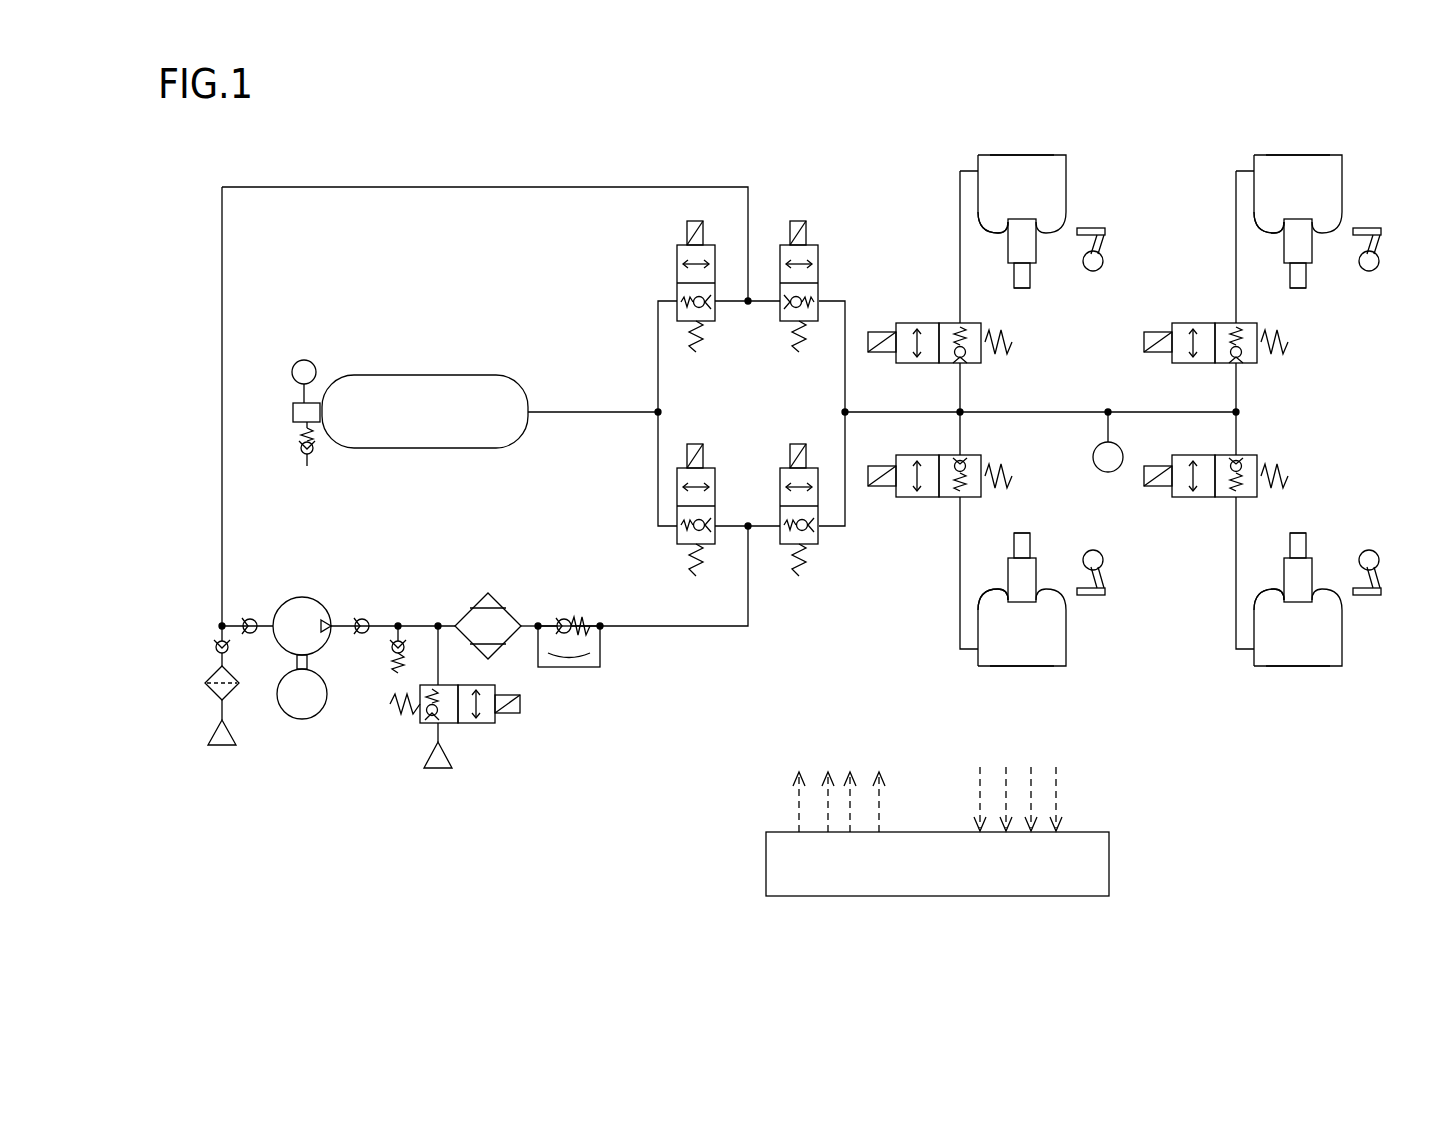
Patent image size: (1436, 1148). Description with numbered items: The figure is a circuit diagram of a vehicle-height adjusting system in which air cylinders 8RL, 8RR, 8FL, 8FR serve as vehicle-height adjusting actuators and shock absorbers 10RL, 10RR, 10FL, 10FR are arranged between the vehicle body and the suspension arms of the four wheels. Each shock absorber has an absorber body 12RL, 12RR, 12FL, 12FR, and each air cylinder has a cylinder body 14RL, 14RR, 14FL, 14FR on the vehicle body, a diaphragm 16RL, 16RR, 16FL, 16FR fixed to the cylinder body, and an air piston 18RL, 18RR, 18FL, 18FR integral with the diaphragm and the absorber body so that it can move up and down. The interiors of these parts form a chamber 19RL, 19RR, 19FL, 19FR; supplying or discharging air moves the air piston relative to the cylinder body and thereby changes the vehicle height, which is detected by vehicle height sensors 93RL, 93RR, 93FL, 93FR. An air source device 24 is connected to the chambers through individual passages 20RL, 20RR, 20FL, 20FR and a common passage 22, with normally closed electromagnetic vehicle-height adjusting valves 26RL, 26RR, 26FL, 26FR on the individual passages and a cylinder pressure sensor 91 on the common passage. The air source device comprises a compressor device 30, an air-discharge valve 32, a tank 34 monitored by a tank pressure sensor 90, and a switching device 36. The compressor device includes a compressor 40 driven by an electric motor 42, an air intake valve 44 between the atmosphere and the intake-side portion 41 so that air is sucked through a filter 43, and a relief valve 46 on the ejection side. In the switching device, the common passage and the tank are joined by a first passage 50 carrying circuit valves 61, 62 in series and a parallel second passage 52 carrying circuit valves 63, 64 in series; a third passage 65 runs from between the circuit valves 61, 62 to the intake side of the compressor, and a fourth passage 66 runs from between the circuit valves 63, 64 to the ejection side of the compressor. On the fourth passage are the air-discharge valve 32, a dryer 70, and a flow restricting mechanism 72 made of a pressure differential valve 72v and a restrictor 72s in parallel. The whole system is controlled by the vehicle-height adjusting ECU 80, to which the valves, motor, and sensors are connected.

The air cylinder 8RL is at (1070, 151).
The air cylinder 8RR is at (1070, 670).
The air cylinder 8FL is at (1346, 151).
The air cylinder 8FR is at (1346, 670).
The shock absorber 10RL is at (1034, 298).
The shock absorber 10RR is at (1042, 525).
The shock absorber 10FL is at (1310, 298).
The shock absorber 10FR is at (1318, 525).
The absorber body 12RL is at (1030, 280).
The absorber body 12RR is at (1022, 545).
The absorber body 12FL is at (1306, 280).
The absorber body 12FR is at (1298, 545).
The cylinder body 14RL is at (1000, 153).
The cylinder body 14RR is at (1000, 668).
The cylinder body 14FL is at (1276, 153).
The cylinder body 14FR is at (1276, 668).
The diaphragm 16RL is at (978, 231).
The diaphragm 16RR is at (978, 592).
The diaphragm 16FL is at (1254, 231).
The diaphragm 16FR is at (1254, 592).
The air piston 18RL is at (1012, 252).
The air piston 18RR is at (1012, 570).
The air piston 18FL is at (1288, 252).
The air piston 18FR is at (1288, 570).
The chamber 19RL is at (1024, 163).
The chamber 19RR is at (1032, 662).
The chamber 19FL is at (1300, 163).
The chamber 19FR is at (1308, 662).
The individual passage 20RL is at (960, 293).
The individual passage 20RR is at (960, 528).
The individual passage 20FL is at (1236, 293).
The individual passage 20FR is at (1236, 528).
The common passage 22 is at (872, 410).
The air source device 24 is at (509, 145).
The vehicle-height adjusting valve 26RL is at (975, 361).
The vehicle-height adjusting valve 26RR is at (965, 458).
The vehicle-height adjusting valve 26FL is at (1251, 361).
The vehicle-height adjusting valve 26FR is at (1241, 458).
The compressor device 30 is at (300, 578).
The air-discharge valve 32 is at (490, 719).
The tank 34 is at (480, 385).
The switching device 36 is at (768, 195).
The compressor 40 is at (292, 608).
The intake-side portion 41 is at (216, 622).
The electric motor 42 is at (290, 706).
The filter 43 is at (215, 672).
The air intake valve 44 is at (211, 643).
The relief valve 46 is at (393, 652).
The first passage 50 is at (658, 336).
The second passage 52 is at (658, 474).
The circuit valve 61 is at (676, 253).
The circuit valve 62 is at (819, 253).
The circuit valve 63 is at (710, 476).
The circuit valve 64 is at (814, 472).
The third passage 65 is at (620, 186).
The fourth passage 66 is at (678, 628).
The dryer 70 is at (471, 612).
The flow restricting mechanism 72 is at (556, 597).
The pressure differential valve 72v is at (568, 615).
The restrictor 72s is at (572, 677).
The vehicle-height adjusting ECU 80 is at (937, 831).
The tank pressure sensor 90 is at (312, 360).
The cylinder pressure sensor 91 is at (1093, 457).
The vehicle height sensor 93RL is at (1093, 226).
The vehicle height sensor 93RR is at (1090, 597).
The vehicle height sensor 93FL is at (1369, 226).
The vehicle height sensor 93FR is at (1366, 597).